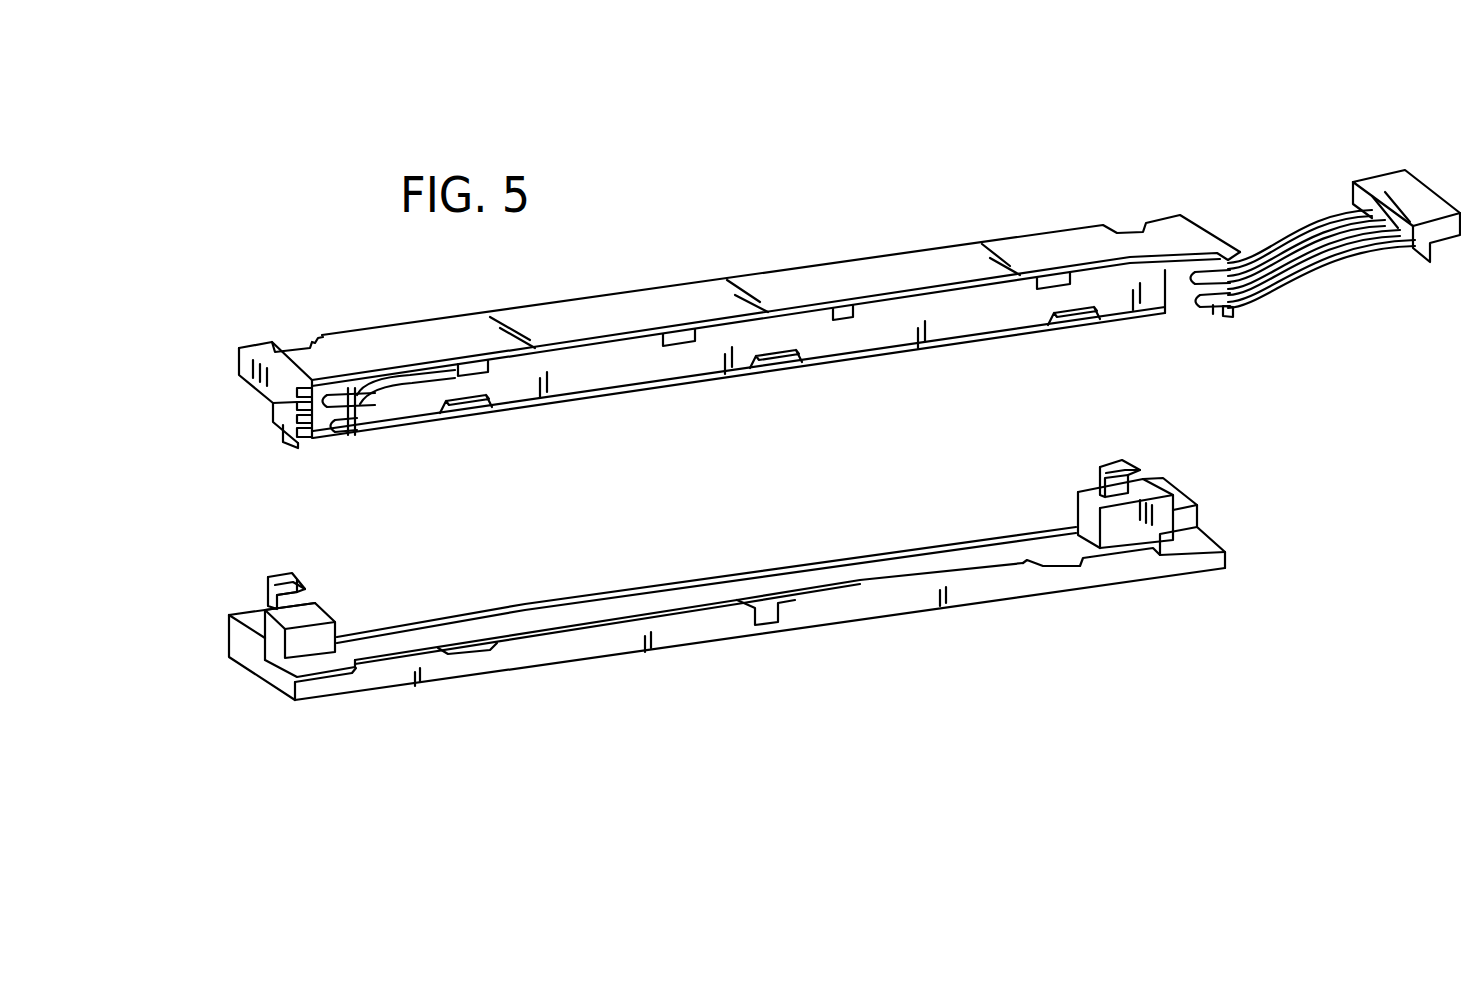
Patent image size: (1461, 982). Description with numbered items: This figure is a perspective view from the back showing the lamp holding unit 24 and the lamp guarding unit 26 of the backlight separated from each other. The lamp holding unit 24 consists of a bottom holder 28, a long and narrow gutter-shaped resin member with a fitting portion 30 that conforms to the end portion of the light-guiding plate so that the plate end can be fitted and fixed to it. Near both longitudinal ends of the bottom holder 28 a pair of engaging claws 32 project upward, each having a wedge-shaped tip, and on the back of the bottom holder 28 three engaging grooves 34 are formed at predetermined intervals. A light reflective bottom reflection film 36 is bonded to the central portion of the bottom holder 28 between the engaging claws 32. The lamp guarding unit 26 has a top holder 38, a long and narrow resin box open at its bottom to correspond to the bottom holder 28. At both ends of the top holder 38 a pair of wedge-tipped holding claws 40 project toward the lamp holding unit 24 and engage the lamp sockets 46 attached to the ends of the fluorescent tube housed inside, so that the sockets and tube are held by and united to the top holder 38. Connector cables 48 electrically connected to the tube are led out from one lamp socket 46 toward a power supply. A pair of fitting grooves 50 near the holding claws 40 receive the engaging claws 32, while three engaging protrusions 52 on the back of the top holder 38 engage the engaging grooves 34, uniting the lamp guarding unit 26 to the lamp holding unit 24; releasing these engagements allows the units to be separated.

The lamp holding unit 24 is at (673, 564).
The lamp guarding unit 26 is at (798, 323).
The bottom holder 28 is at (620, 660).
The fitting portion 30 is at (337, 623).
The engaging claws 32 is at (288, 577).
The engaging grooves 34 is at (470, 648).
The bottom reflection film 36 is at (640, 600).
The top holder 38 is at (705, 286).
The holding claws 40 is at (288, 446).
The lamp sockets 46 is at (335, 440).
The connector cables 48 is at (1348, 248).
The fitting grooves 50 is at (305, 343).
The engaging protrusions 52 is at (465, 420).